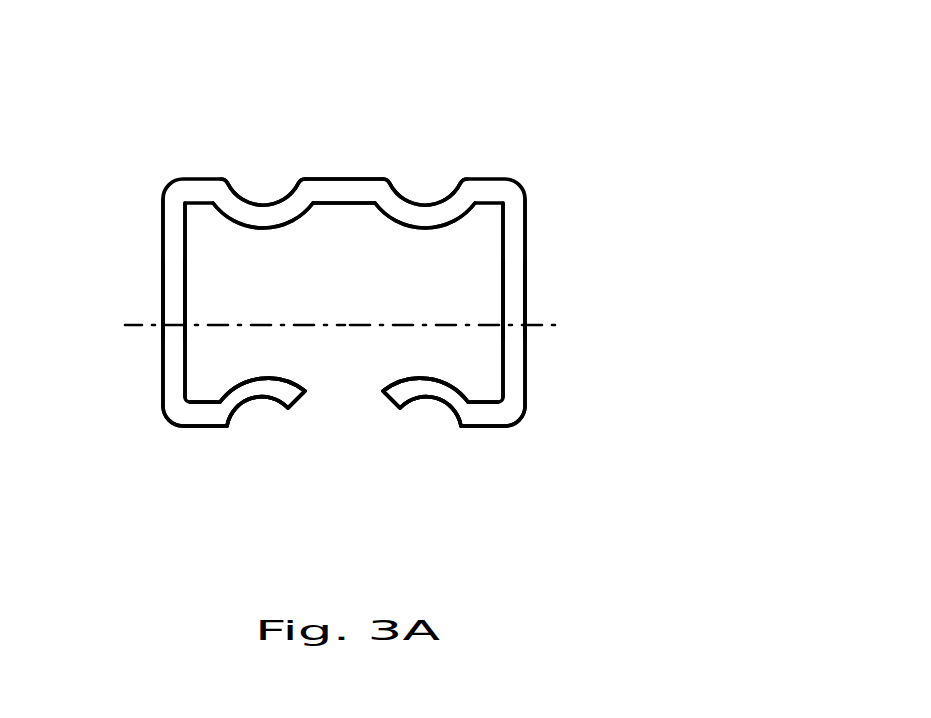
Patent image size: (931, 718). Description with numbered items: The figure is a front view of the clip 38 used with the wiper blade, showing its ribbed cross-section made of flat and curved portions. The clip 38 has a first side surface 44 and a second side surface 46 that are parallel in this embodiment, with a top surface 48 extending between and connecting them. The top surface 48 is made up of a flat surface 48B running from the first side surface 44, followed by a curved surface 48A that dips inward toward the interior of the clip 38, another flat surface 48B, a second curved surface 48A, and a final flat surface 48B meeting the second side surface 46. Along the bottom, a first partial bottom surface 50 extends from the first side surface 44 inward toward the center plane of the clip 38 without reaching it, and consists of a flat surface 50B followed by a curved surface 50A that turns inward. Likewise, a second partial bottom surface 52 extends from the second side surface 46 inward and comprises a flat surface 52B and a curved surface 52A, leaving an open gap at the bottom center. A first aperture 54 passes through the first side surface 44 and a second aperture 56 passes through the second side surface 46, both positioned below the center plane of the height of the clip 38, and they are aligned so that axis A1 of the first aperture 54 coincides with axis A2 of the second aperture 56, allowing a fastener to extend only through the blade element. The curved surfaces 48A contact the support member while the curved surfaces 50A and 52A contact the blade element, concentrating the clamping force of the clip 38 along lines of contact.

The clip 38 is at (156, 111).
The first side surface 44 is at (151, 376).
The second side surface 46 is at (540, 373).
The top surface 48 is at (290, 170).
The curved surface 48A is at (432, 180).
The flat surface 48B is at (358, 155).
The first partial bottom surface 50 is at (239, 438).
The curved surface 50A is at (267, 411).
The flat surface 50B is at (186, 440).
The second partial bottom surface 52 is at (468, 442).
The curved surface 52A is at (422, 411).
The flat surface 52B is at (513, 440).
The first aperture 54 is at (148, 305).
The second aperture 56 is at (541, 313).
The axis of first aperture A1 is at (130, 337).
The axis of second aperture A2 is at (572, 338).